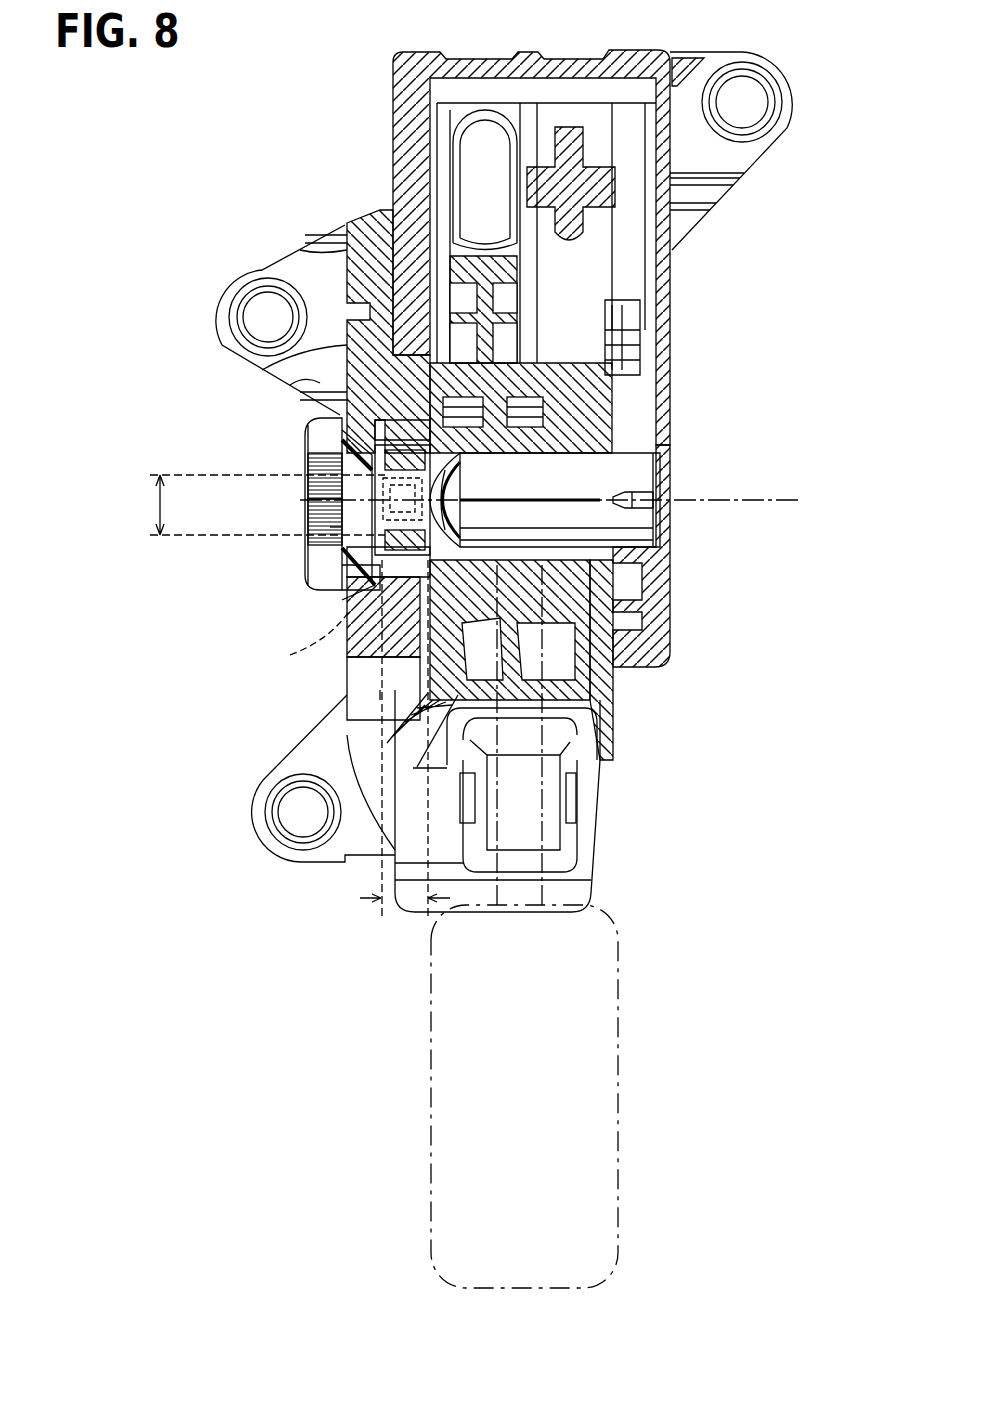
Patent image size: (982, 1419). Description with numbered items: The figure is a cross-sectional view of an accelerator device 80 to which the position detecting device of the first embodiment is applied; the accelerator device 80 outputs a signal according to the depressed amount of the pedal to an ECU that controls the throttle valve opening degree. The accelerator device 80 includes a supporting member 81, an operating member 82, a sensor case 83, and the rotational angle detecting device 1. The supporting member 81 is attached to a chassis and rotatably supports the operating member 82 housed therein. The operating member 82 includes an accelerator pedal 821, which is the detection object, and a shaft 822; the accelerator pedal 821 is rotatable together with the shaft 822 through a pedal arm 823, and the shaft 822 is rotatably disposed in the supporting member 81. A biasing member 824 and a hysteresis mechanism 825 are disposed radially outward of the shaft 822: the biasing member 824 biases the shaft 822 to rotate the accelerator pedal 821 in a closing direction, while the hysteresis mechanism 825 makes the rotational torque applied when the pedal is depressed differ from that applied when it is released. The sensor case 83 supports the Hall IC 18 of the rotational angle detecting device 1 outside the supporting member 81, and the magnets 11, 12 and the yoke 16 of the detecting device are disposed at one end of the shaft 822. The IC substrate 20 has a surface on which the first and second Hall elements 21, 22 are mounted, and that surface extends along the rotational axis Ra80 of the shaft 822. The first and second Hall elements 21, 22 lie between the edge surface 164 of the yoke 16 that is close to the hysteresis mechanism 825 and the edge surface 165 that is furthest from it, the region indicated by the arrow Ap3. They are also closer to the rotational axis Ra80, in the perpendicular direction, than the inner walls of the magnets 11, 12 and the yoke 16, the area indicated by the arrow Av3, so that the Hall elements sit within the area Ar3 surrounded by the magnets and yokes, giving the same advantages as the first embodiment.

The accelerator device 80 is at (315, 61).
The supporting member 81 is at (380, 118).
The operating member 82 is at (662, 470).
The sensor case 83 is at (355, 357).
The edge surface 164 is at (450, 481).
The edge surface 165 is at (345, 548).
The rotational angle detecting device 1 is at (370, 578).
The magnet 11 is at (335, 455).
The magnet 12 is at (362, 572).
The yoke 16 is at (320, 477).
The Hall IC 18 is at (307, 508).
The IC substrate 20 is at (307, 486).
The first Hall element 21 is at (360, 422).
The second Hall element 22 is at (353, 630).
The accelerator pedal 821 is at (428, 1067).
The shaft 822 is at (630, 518).
The pedal arm 823 is at (577, 783).
The biasing member 824 is at (437, 201).
The hysteresis mechanism 825 is at (620, 343).
The area Av3 is at (160, 505).
The area Ar3 is at (330, 527).
The region Ap3 is at (410, 903).
The rotational axis Ra80 is at (795, 503).